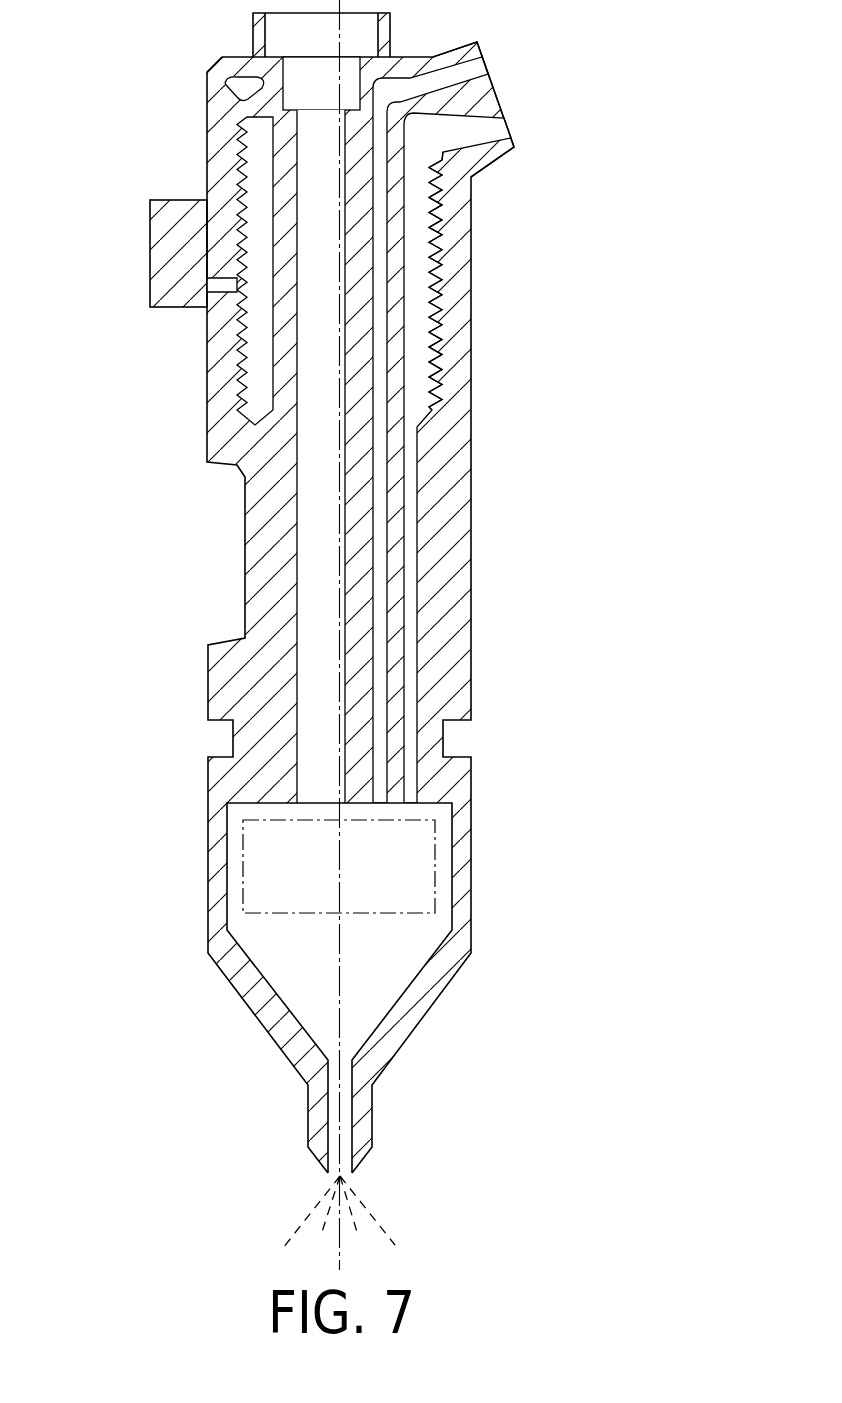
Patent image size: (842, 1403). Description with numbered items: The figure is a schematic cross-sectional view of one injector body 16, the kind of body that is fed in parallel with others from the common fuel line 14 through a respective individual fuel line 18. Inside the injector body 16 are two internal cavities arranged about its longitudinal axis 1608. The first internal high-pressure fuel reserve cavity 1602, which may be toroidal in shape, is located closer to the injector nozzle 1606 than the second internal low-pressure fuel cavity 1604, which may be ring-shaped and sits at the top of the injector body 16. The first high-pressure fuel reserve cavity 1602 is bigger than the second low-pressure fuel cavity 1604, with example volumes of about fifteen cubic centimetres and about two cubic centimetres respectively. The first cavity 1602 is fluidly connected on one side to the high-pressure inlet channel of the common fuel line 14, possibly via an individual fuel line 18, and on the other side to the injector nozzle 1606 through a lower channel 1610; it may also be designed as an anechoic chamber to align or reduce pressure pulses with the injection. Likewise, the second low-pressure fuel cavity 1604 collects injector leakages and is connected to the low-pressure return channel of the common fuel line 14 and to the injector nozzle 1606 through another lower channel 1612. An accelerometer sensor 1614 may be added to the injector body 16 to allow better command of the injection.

The common fuel line 14 is at (541, 95).
The individual fuel line 18 is at (519, 68).
The injector body 16 is at (476, 280).
The first internal high-pressure fuel reserve cavity 1602 is at (436, 336).
The second internal low-pressure fuel cavity 1604 is at (243, 87).
The injector nozzle 1606 is at (277, 878).
The longitudinal axis 1608 is at (338, 1253).
The lower channel 1610 is at (408, 602).
The another lower channel 1612 is at (380, 678).
The accelerometer sensor 1614 is at (150, 235).